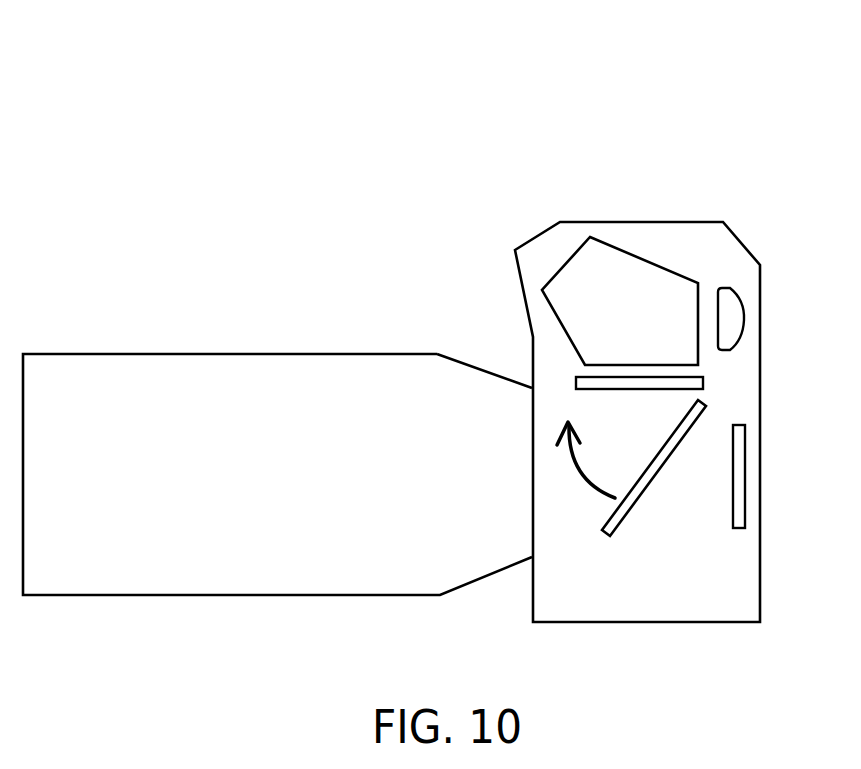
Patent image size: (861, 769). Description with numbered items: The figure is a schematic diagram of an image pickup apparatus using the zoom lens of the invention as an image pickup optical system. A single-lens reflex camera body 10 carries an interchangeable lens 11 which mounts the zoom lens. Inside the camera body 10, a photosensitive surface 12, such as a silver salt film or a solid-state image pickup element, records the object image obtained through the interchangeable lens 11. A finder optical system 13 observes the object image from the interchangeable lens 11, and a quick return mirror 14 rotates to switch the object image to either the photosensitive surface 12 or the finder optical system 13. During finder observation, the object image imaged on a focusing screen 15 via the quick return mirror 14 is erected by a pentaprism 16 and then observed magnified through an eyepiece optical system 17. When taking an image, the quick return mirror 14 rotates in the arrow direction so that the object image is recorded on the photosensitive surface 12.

The single-lens reflex camera body 10 is at (717, 593).
The interchangeable lens 11 is at (348, 562).
The photosensitive surface 12 is at (737, 503).
The finder optical system 13 is at (778, 142).
The quick return mirror 14 is at (618, 525).
The focusing screen 15 is at (610, 383).
The pentaprism 16 is at (617, 292).
The eyepiece optical system 17 is at (728, 308).